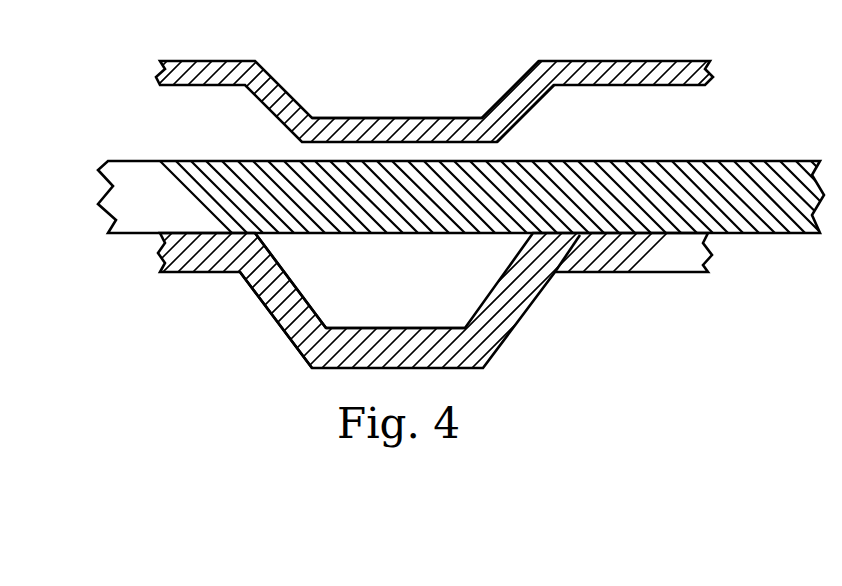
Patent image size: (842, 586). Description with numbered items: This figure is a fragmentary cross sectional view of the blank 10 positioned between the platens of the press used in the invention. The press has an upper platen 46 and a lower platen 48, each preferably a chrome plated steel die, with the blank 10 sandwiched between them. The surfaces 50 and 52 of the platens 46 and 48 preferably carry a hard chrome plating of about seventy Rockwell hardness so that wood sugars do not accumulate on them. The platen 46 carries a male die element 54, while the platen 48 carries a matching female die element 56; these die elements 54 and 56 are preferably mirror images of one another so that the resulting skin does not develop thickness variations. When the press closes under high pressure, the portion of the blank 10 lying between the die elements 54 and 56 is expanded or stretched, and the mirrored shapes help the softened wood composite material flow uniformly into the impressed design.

The blank 10 is at (735, 192).
The platen 46 is at (660, 72).
The platen 48 is at (633, 257).
The surface 50 is at (527, 102).
The surface 52 is at (277, 295).
The male die element 54 is at (397, 107).
The female die element 56 is at (392, 323).